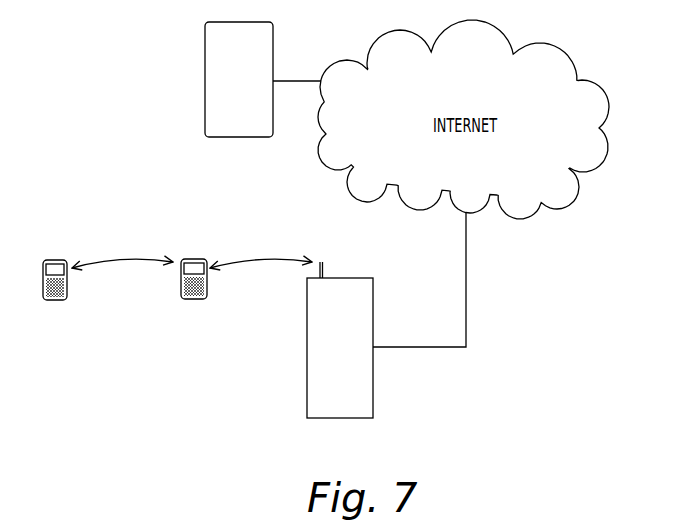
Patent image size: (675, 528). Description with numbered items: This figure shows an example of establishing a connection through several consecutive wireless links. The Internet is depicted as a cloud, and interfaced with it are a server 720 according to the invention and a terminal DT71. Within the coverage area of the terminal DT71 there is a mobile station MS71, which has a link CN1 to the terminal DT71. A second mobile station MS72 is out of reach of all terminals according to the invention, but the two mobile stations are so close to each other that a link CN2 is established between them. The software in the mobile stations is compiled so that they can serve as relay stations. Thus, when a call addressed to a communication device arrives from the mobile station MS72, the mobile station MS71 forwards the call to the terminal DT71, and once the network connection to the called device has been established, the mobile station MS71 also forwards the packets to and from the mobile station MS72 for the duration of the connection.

The server 720 is at (205, 79).
The terminal DT71 is at (364, 287).
The mobile station MS71 is at (197, 299).
The second mobile station MS72 is at (58, 300).
The link CN1 is at (257, 262).
The link CN2 is at (115, 262).